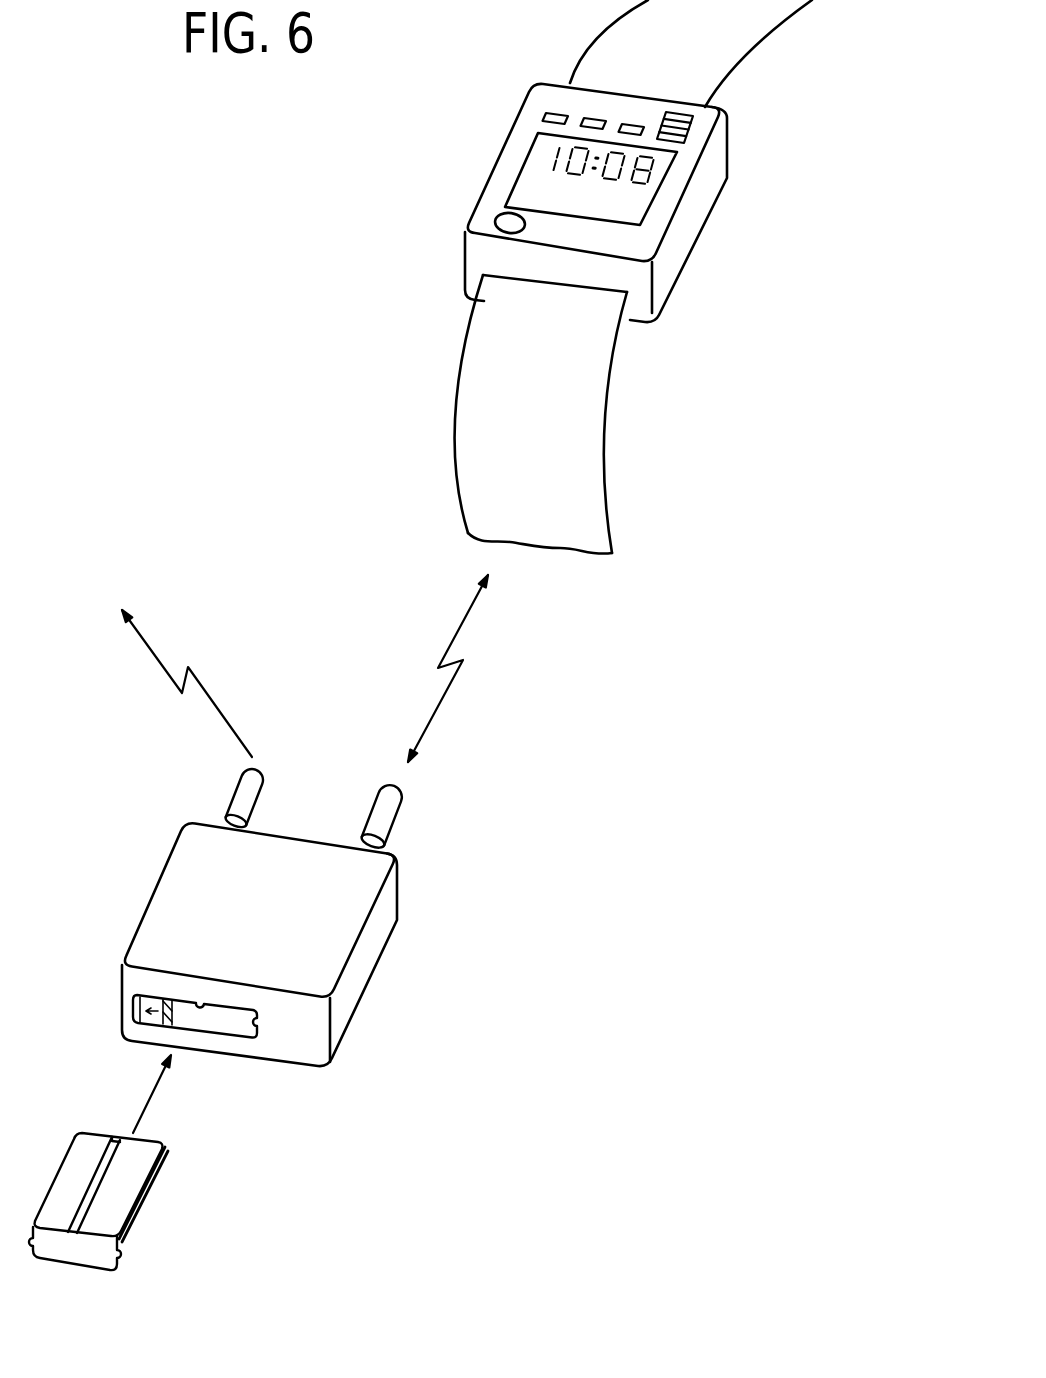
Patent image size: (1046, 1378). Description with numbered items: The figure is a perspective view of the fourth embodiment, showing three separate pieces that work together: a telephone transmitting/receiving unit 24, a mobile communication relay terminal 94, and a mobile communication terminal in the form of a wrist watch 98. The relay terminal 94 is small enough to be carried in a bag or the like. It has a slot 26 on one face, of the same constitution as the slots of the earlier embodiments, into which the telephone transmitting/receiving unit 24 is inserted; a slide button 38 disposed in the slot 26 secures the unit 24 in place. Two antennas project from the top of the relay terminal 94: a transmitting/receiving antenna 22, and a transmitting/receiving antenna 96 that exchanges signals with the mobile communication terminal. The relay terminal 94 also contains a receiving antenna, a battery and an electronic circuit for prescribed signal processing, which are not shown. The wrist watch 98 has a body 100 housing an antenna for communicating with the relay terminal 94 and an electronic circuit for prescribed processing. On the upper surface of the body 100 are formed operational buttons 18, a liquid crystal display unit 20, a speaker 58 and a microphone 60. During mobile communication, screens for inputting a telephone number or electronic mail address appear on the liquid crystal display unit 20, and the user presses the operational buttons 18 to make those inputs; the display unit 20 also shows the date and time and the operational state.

The operational buttons 18 is at (543, 118).
The liquid crystal display unit 20 is at (535, 177).
The transmitting/receiving antenna 22 is at (252, 798).
The telephone transmitting/receiving unit 24 is at (168, 1198).
The slot 26 is at (238, 1022).
The slide button 38 is at (153, 1022).
The speaker 58 is at (693, 118).
The microphone 60 is at (494, 230).
The mobile communication relay terminal 94 is at (378, 1008).
The transmitting/receiving antenna 96 is at (393, 813).
The wrist watch 98 is at (703, 255).
The body 100 is at (710, 185).